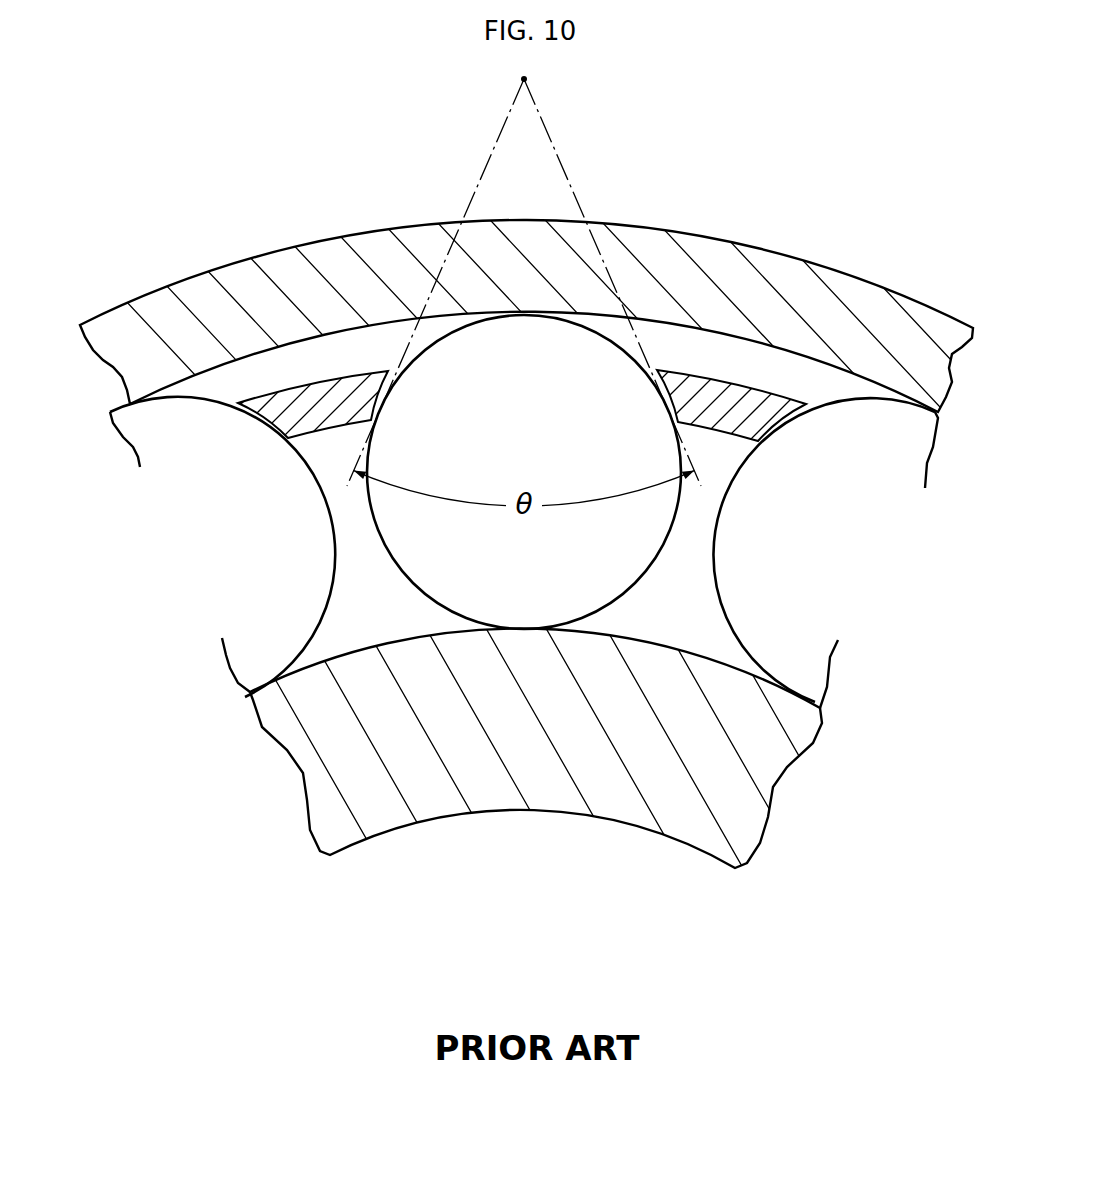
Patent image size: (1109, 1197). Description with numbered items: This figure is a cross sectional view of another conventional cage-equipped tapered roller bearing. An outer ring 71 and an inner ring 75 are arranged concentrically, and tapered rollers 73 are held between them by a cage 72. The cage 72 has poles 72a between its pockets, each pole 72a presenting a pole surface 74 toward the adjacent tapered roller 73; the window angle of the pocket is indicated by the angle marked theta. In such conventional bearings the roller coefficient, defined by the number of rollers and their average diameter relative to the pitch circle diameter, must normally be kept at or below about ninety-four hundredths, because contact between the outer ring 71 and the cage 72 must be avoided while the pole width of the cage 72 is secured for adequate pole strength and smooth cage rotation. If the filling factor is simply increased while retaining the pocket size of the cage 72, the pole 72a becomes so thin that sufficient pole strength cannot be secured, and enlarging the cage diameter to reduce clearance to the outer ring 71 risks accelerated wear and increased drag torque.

The outer ring 71 is at (790, 280).
The cage 72 is at (530, 315).
The pole 72a is at (345, 387).
The tapered roller 73 is at (588, 347).
The pole surface 74 is at (658, 397).
The inner ring 75 is at (543, 797).